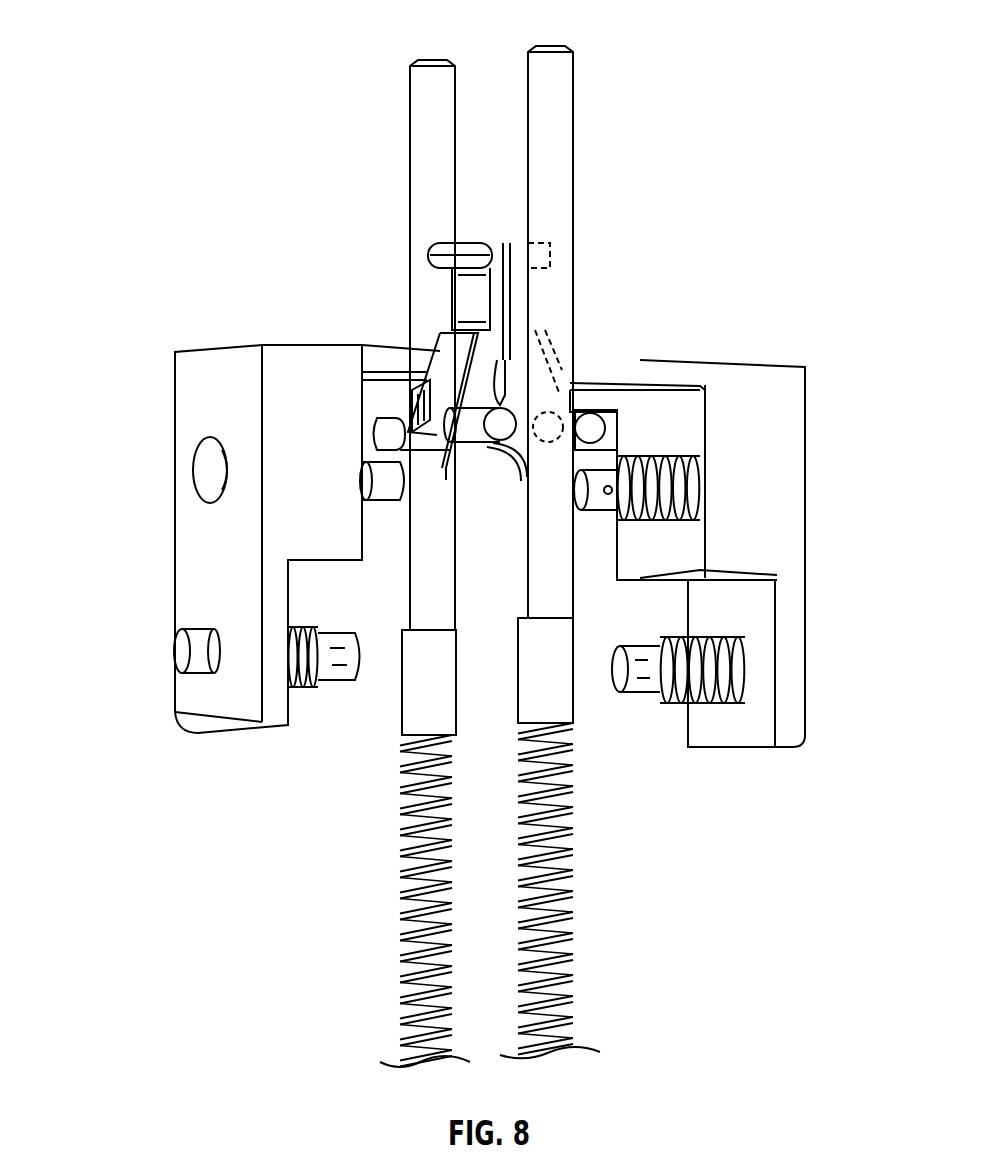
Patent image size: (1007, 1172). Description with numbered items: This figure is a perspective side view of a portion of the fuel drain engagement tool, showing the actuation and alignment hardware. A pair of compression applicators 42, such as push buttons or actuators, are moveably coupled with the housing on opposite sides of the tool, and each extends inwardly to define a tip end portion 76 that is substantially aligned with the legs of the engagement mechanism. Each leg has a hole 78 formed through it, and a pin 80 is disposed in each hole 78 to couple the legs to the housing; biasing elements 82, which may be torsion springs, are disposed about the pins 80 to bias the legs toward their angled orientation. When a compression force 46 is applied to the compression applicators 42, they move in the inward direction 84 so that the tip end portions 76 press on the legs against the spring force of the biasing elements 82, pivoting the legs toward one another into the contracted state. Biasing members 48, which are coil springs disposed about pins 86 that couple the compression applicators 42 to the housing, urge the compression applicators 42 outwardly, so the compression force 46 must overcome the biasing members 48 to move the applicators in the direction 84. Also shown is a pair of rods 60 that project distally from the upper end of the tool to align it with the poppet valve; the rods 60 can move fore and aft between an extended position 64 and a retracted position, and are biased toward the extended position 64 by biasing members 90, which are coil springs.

The compression applicator 42 is at (195, 388).
The compression force 46 is at (160, 519).
The inward direction 84 is at (833, 513).
The biasing member 48 is at (362, 478).
The rod 60 is at (420, 125).
The extended position 64 is at (413, 45).
The tip end portion 76 is at (437, 365).
The hole 78 is at (548, 452).
The pin 80 is at (472, 417).
The biasing element 82 is at (418, 405).
The pin 86 is at (378, 505).
The biasing member 90 is at (400, 1022).